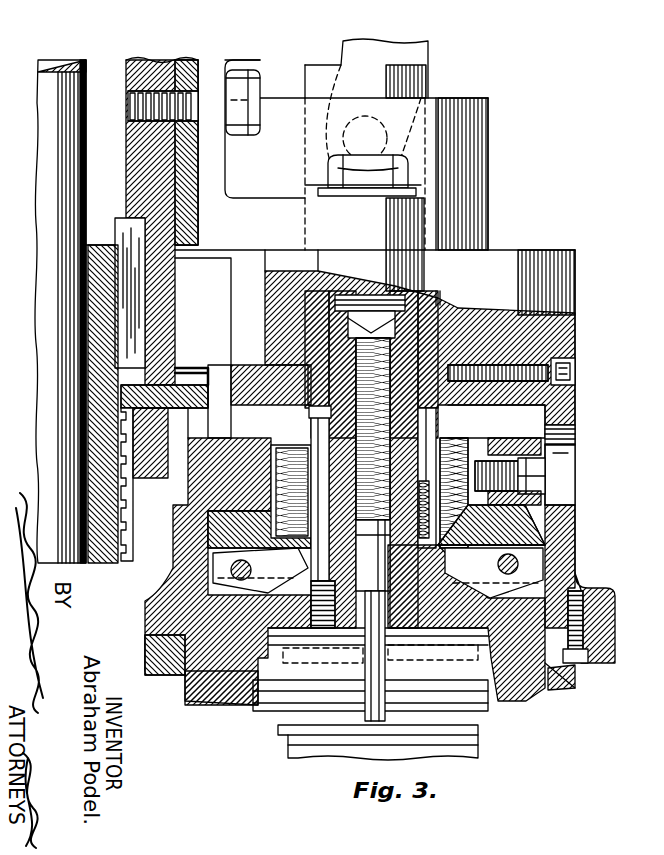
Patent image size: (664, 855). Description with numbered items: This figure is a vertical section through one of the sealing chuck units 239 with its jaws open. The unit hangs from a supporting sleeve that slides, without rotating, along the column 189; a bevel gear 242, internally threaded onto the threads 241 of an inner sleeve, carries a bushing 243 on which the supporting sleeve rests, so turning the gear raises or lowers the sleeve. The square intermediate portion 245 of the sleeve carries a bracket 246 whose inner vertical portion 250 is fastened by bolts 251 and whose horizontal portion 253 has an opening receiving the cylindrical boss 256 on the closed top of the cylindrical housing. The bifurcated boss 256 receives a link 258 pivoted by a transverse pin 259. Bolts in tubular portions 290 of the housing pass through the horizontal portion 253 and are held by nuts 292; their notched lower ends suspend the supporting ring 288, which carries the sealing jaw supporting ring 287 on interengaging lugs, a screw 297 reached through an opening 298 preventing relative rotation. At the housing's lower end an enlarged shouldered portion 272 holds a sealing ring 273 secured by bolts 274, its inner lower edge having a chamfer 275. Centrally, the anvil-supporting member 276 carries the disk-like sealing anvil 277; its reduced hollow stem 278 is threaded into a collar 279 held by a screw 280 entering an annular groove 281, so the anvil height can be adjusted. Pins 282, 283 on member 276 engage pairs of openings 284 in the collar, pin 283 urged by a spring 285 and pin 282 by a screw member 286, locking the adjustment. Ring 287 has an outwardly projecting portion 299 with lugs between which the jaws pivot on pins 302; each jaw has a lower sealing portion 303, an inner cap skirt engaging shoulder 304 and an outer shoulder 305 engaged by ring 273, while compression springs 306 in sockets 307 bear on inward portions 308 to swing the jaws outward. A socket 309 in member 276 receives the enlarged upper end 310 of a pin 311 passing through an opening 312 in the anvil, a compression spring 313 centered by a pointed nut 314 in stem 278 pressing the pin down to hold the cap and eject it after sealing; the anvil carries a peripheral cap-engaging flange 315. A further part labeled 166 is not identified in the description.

The base plate 166 is at (470, 736).
The column 189 is at (43, 155).
The sealing chuck unit 239 is at (576, 275).
The threads of sleeve 241 is at (125, 513).
The bevel gear 242 is at (120, 490).
The bushing 243 is at (80, 395).
The intermediate portion 245 is at (198, 207).
The bracket 246 is at (224, 50).
The inner vertical portion 250 is at (199, 70).
The bolts 251 is at (236, 84).
The horizontal portion 253 is at (356, 155).
The cylindrical boss 256 is at (383, 73).
The link 258 is at (405, 42).
The transverse pin 259 is at (373, 125).
The enlarged shouldered portion 272 is at (606, 648).
The sealing ring 273 is at (576, 630).
The bolts 274 is at (606, 613).
The chamfer 275 is at (560, 691).
The anvil-supporting member 276 is at (448, 432).
The sealing anvil 277 is at (433, 679).
The reduced hollow stem 278 is at (430, 296).
The collar 279 is at (305, 263).
The screw 280 is at (568, 358).
The annular groove 281 is at (330, 356).
The pin 282 is at (301, 412).
The pin 283 is at (430, 411).
The openings 284 is at (300, 393).
The spring 285 is at (370, 696).
The screw member 286 is at (323, 666).
The sealing jaw supporting ring 287 is at (552, 428).
The supporting ring 288 is at (518, 430).
The tubular portions 290 is at (426, 250).
The nuts 292 is at (375, 183).
The screw 297 is at (540, 462).
The opening 298 is at (552, 441).
The horizontal outwardly projecting portion 299 is at (545, 492).
The transversely extending pin 302 is at (510, 556).
The lower sealing portion 303 is at (221, 702).
The inner cap skirt engaging shoulder portion 304 is at (492, 694).
The outwardly projecting shoulder portion 305 is at (176, 681).
The compression springs 306 is at (494, 573).
The vertical sockets 307 is at (522, 510).
The inwardly projecting portions 308 is at (470, 540).
The socket 309 is at (303, 431).
The enlarged upper end 310 is at (360, 553).
The pin 311 is at (366, 664).
The opening 312 is at (282, 558).
The compression spring 313 is at (298, 330).
The pointed nut 314 is at (370, 330).
The peripheral cap-engaging flange 315 is at (264, 668).